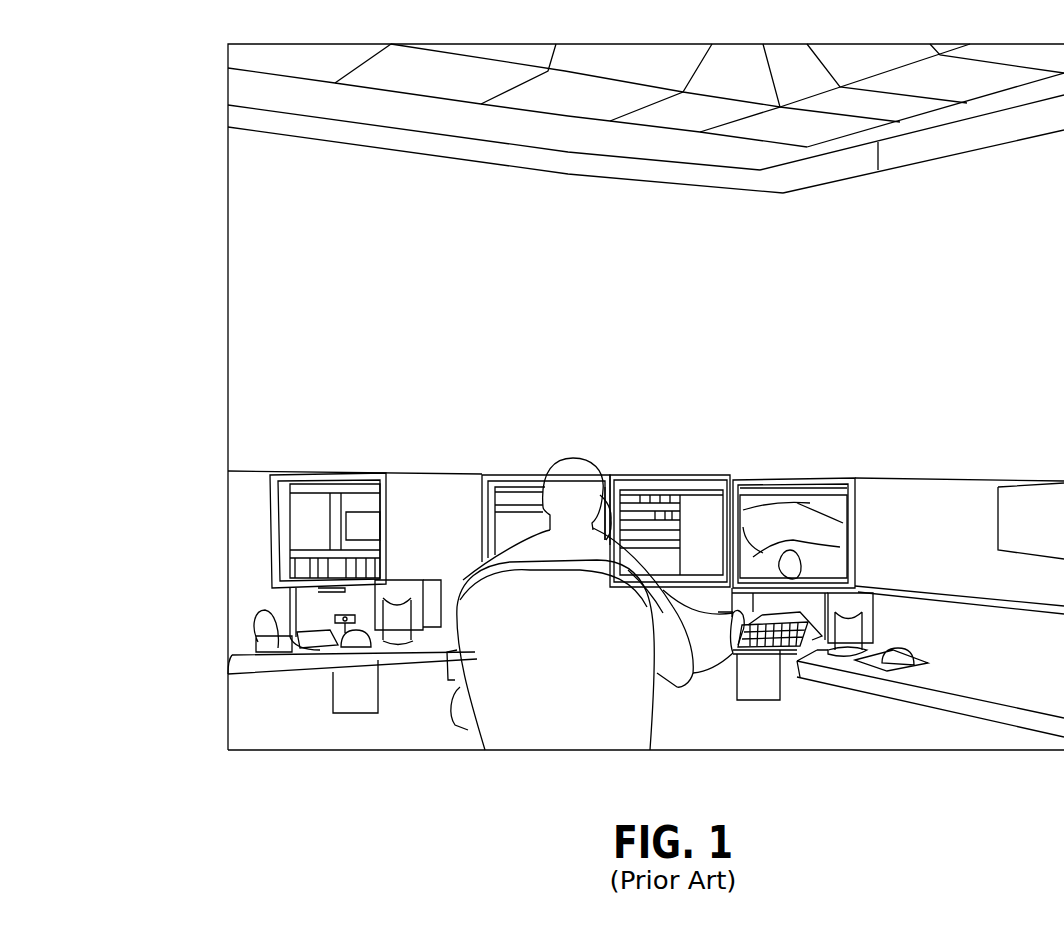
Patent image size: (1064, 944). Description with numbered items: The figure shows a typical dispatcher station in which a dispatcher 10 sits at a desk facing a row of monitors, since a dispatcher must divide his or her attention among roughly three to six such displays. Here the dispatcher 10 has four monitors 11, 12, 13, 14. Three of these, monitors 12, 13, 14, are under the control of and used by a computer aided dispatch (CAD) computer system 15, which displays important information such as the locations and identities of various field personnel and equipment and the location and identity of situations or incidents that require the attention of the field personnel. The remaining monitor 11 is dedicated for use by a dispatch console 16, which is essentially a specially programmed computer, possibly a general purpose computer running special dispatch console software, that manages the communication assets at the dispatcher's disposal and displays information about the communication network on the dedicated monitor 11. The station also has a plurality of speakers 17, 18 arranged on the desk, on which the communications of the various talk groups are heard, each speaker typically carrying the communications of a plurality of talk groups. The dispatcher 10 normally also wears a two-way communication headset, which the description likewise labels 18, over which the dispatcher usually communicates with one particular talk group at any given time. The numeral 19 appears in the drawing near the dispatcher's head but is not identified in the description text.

The dispatcher 10 is at (530, 660).
The monitor 11 is at (308, 533).
The monitor 12 is at (527, 502).
The monitor 13 is at (653, 495).
The monitor 14 is at (778, 522).
The computer aided dispatch (CAD) computer system 15 is at (758, 688).
The dispatch console 16 is at (345, 702).
The speaker 17 is at (400, 597).
The speaker 18 is at (847, 615).
The headset 19 is at (607, 483).